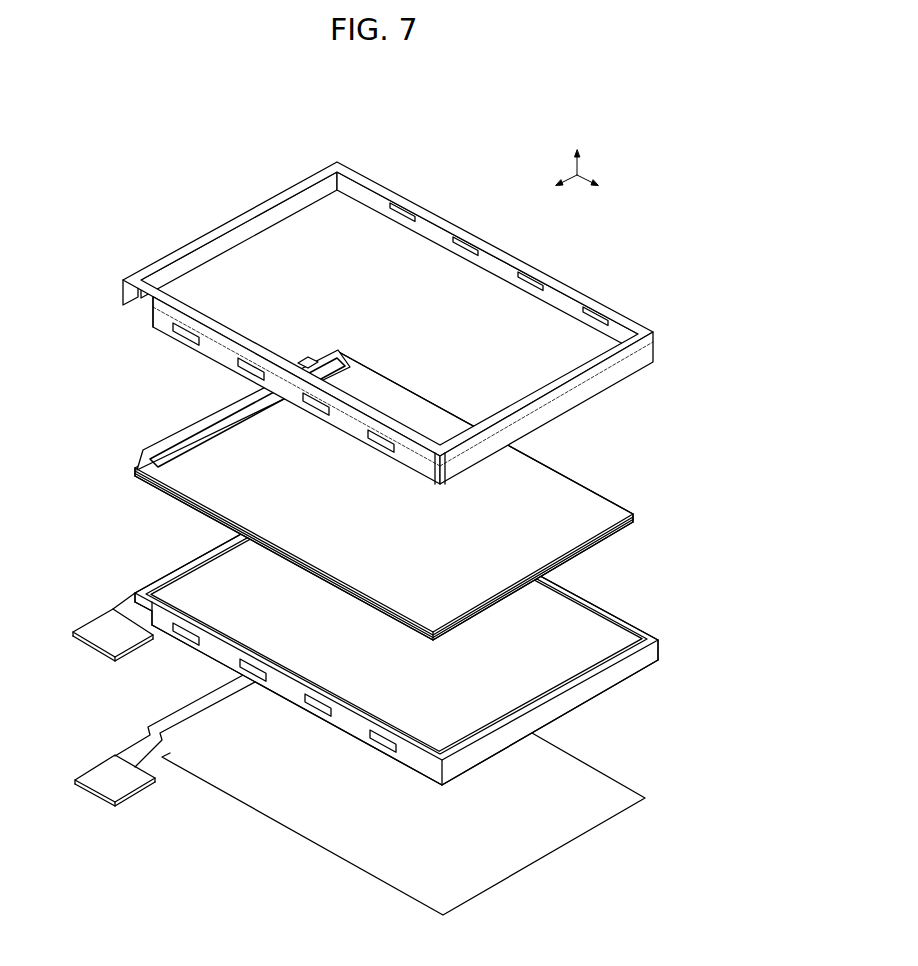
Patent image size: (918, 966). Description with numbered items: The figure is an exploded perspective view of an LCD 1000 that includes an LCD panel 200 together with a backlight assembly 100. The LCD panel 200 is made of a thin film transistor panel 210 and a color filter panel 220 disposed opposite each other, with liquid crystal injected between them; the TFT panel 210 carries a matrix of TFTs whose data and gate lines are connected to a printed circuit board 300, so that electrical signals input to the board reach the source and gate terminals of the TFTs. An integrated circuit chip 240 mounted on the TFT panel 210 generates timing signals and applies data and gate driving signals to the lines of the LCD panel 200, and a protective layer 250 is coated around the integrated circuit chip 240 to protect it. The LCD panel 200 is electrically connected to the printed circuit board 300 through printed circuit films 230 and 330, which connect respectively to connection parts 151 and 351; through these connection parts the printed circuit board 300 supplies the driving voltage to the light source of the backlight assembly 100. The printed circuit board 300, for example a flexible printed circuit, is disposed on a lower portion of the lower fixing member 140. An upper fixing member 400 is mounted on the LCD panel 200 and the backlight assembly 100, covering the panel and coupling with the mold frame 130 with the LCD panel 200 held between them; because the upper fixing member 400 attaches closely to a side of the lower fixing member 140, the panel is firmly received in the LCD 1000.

The LCD 1000 is at (388, 108).
The upper fixing member 400 is at (614, 314).
The LCD panel 200 is at (113, 442).
The thin film transistor (TFT) panel 210 is at (633, 524).
The color filter panel 220 is at (384, 495).
The printed circuit film 230 is at (203, 417).
The integrated circuit chip 240 is at (175, 455).
The protective layer 250 is at (137, 478).
The backlight assembly 100 is at (110, 577).
The mold frame 130 is at (642, 627).
The lower fixing member 140 is at (633, 665).
The connection part 151 is at (93, 630).
The printed circuit board 300 is at (535, 843).
The printed circuit film 330 is at (167, 718).
The connection part 351 is at (102, 773).